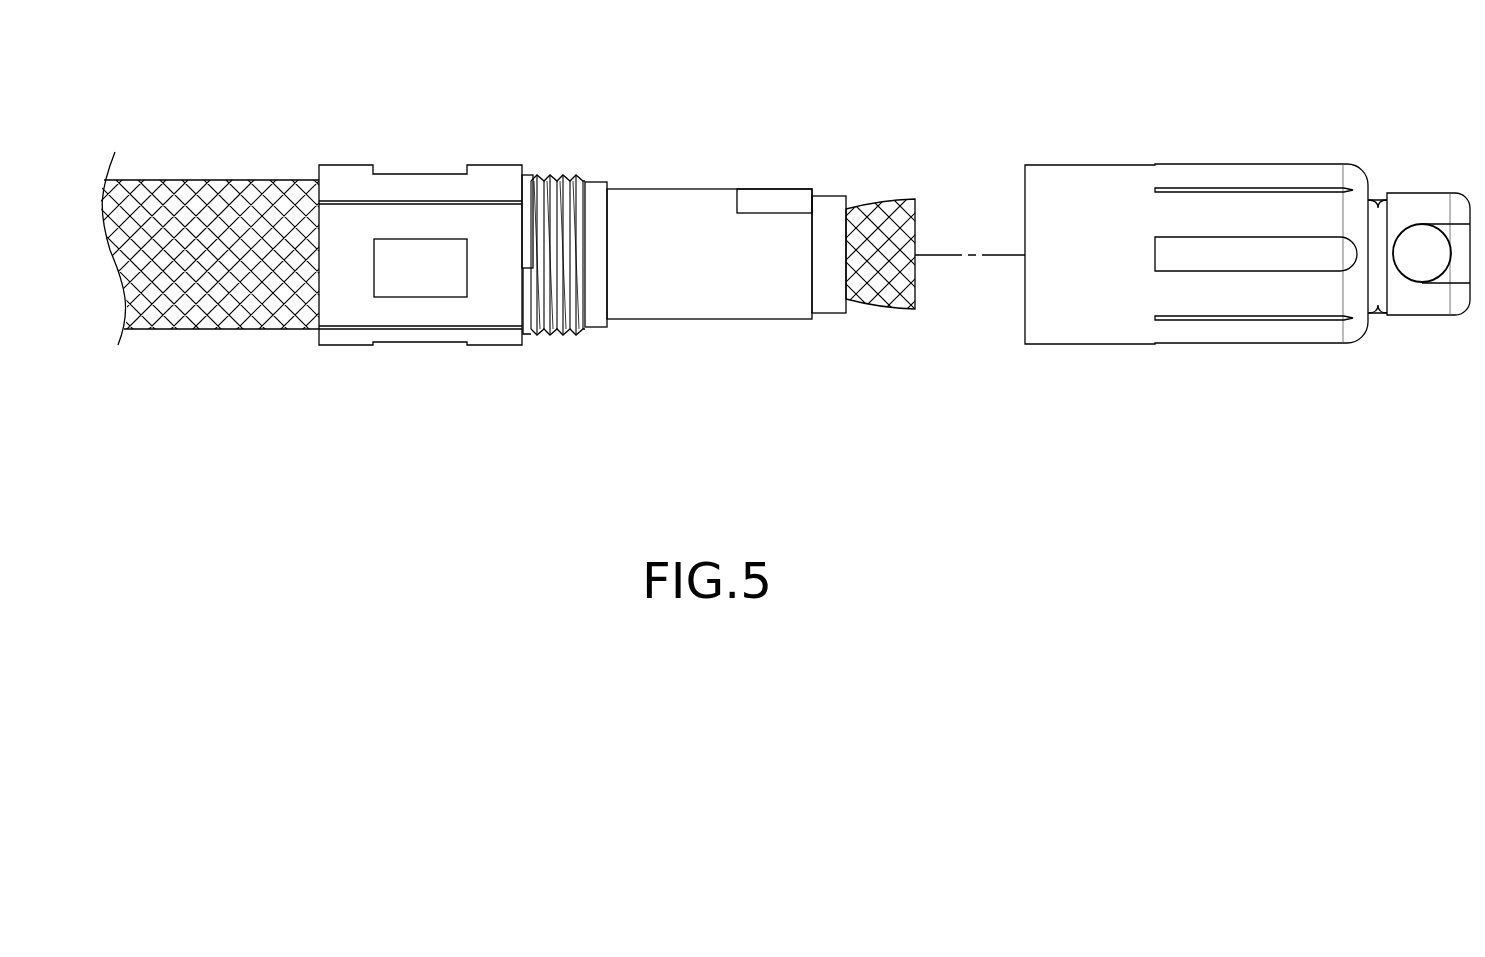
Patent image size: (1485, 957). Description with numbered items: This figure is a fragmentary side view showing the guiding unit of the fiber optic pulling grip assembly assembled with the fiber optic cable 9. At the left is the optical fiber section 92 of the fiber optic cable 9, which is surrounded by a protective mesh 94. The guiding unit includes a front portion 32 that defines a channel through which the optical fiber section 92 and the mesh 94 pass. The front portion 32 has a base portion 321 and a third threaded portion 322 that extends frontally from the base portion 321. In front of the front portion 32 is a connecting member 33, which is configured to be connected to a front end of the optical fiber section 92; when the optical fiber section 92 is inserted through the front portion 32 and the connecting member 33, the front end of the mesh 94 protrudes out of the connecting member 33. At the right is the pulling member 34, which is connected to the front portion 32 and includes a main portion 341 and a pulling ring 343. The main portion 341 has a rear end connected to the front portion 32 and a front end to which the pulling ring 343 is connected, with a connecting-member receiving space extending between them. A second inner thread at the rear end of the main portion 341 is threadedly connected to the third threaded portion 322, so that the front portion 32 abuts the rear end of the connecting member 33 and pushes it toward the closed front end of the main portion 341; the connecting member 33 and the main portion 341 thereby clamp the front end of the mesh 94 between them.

The fiber optic cable 9 is at (278, 270).
The optical fiber section 92 is at (266, 200).
The mesh 94 is at (887, 296).
The front portion 32 is at (462, 240).
The base portion 321 is at (400, 338).
The third threaded portion 322 is at (565, 335).
The connecting member 33 is at (702, 187).
The pulling member 34 is at (1247, 265).
The main portion 341 is at (1137, 174).
The pulling ring 343 is at (1418, 205).